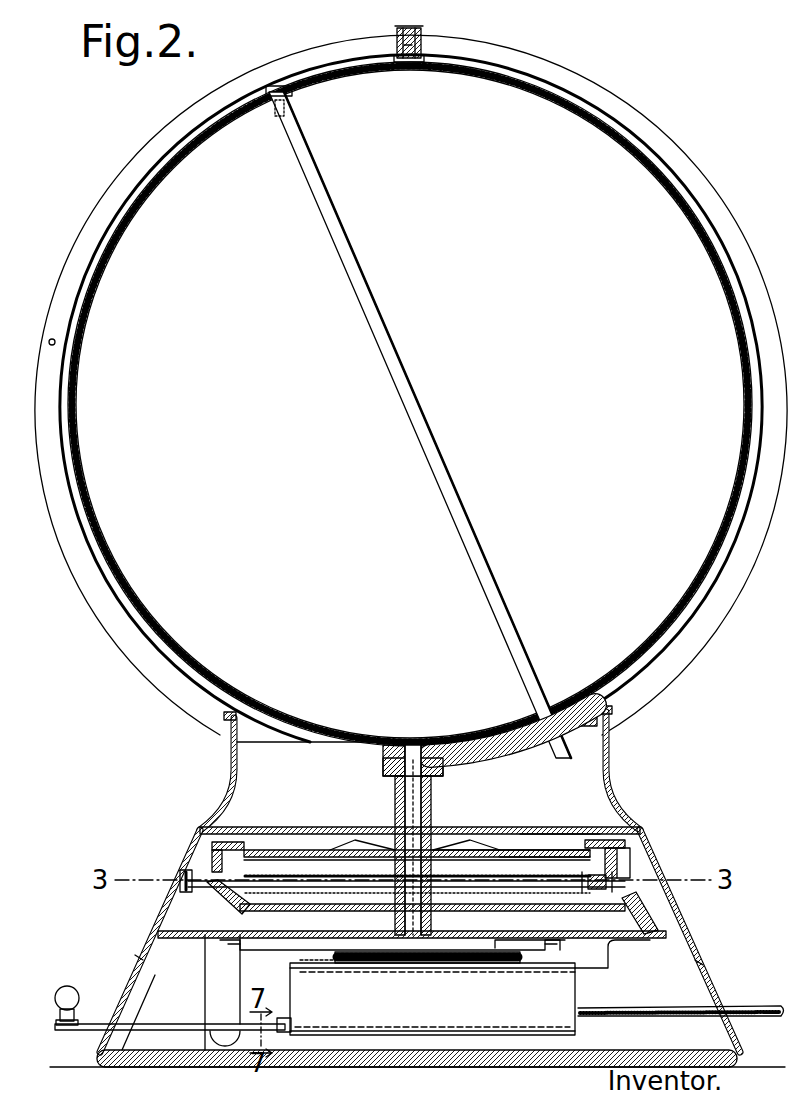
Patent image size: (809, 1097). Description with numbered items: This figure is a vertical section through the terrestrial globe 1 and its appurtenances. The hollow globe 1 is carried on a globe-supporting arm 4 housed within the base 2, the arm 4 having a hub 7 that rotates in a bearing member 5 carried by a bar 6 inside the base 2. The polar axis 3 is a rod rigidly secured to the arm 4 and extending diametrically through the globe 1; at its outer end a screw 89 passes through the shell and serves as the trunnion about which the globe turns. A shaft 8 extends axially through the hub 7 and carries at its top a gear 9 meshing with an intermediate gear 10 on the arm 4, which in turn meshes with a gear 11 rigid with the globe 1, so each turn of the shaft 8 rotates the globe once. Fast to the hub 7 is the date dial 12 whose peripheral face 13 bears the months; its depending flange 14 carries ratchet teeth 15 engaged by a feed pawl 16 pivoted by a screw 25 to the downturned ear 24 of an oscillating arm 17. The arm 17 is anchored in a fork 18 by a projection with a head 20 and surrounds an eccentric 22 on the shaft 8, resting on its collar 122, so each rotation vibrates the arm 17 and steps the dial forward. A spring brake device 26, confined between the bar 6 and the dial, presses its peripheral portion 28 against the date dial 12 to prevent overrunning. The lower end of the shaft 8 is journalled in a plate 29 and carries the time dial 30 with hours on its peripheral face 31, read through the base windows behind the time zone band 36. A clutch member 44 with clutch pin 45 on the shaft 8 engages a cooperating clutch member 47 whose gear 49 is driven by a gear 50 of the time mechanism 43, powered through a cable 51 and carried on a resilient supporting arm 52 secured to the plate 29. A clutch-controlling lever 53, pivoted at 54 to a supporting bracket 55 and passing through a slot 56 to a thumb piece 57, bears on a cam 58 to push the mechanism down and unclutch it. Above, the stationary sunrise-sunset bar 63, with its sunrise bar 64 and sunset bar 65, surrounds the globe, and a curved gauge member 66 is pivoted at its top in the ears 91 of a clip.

The terrestrial globe 1 is at (630, 140).
The base 2 is at (652, 855).
The polar axis 3 is at (458, 505).
The arm 4 is at (515, 765).
The bearing member 5 is at (396, 792).
The bar 6 is at (325, 827).
The hub 7 is at (430, 802).
The shaft 8 is at (398, 807).
The gear 9 is at (384, 745).
The intermediate gear 10 is at (465, 748).
The gear 11 is at (583, 702).
The date dial 12 is at (540, 830).
The peripheral face 13 is at (632, 850).
The depending flange 14 is at (585, 842).
The ratchet teeth 15 is at (520, 830).
The feed pawl 16 is at (595, 881).
The oscillating arm 17 is at (282, 828).
The fork 18 is at (207, 860).
The head 20 is at (182, 876).
The eccentric 22 is at (390, 878).
The collar 122 is at (388, 898).
The downturned ear 24 is at (592, 908).
The screw 25 is at (585, 885).
The brake device 26 is at (468, 828).
The peripheral portion 28 is at (343, 827).
The plate 29 is at (268, 937).
The time dial 30 is at (205, 928).
The peripheral face 31 is at (652, 912).
The time zone band 36 is at (135, 955).
The time mechanism 43 is at (405, 1056).
The clutch member 44 is at (395, 969).
The clutch pin 45 is at (360, 964).
The clutch member 47 is at (338, 962).
The gear 49 is at (466, 964).
The gear 50 is at (505, 958).
The cable 51 is at (725, 1010).
The resilient supporting arm 52 is at (612, 964).
The clutch-controlling lever 53 is at (165, 1035).
The pivot 54 is at (218, 1042).
The supporting bracket 55 is at (210, 989).
The slot 56 is at (115, 1022).
The thumb piece 57 is at (62, 988).
The cam 58 is at (283, 1018).
The sunrise-sunset bar 63 is at (385, 42).
The sunrise bar 64 is at (88, 232).
The sunset bar 65 is at (738, 232).
The gauge member 66 is at (420, 42).
The screw 89 is at (275, 88).
The ears 91 is at (407, 50).